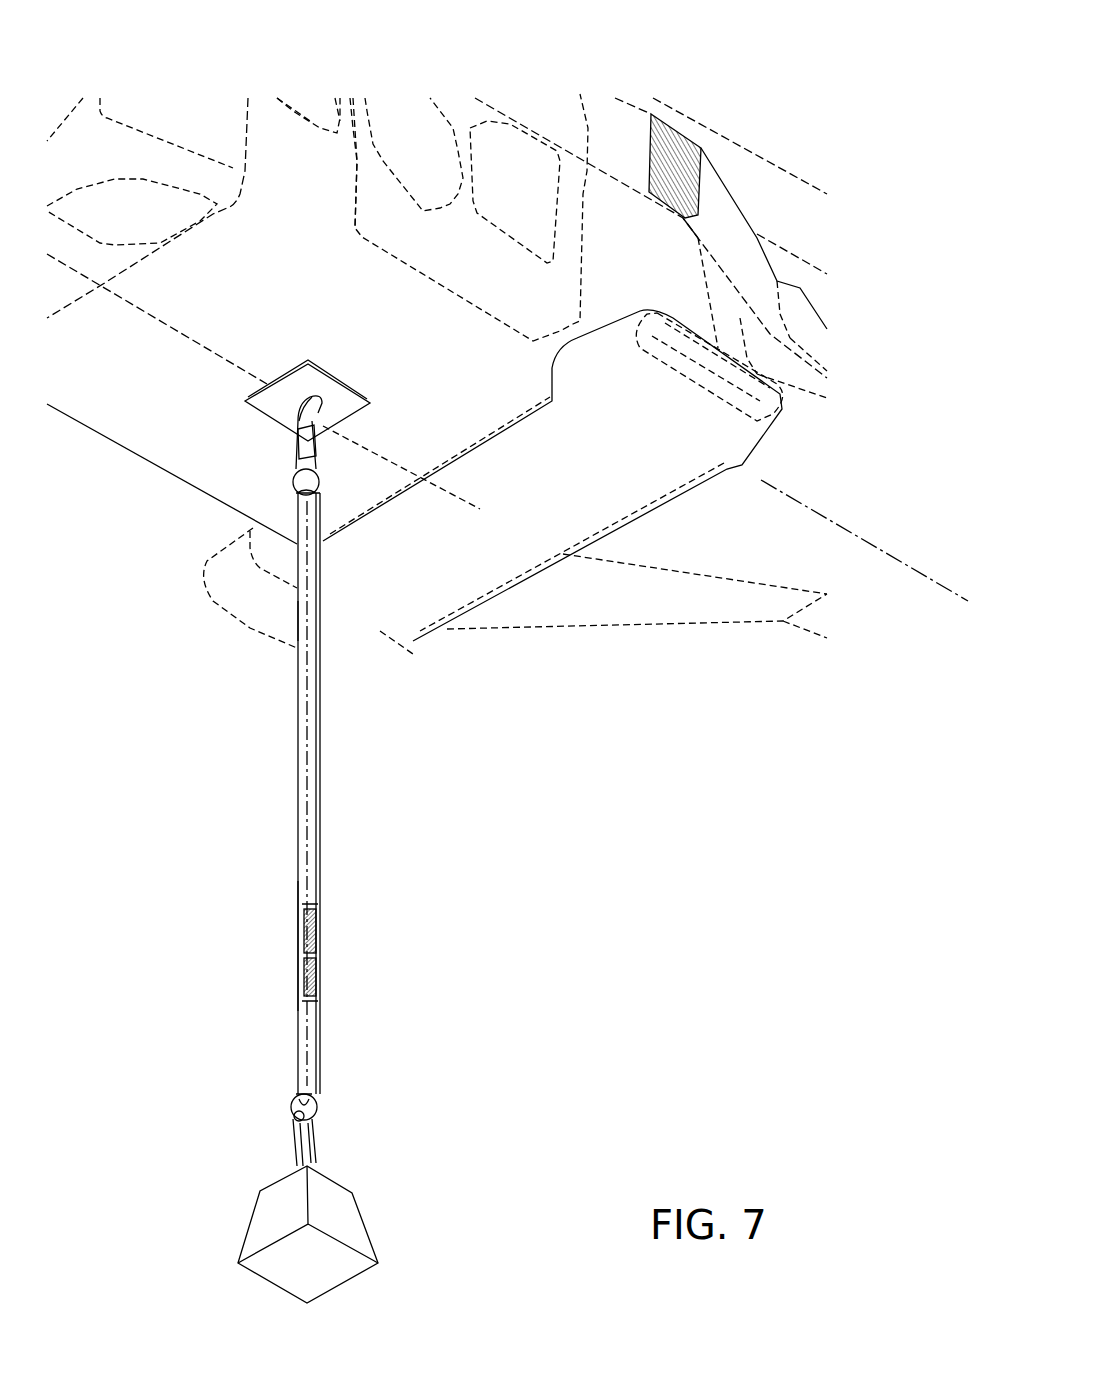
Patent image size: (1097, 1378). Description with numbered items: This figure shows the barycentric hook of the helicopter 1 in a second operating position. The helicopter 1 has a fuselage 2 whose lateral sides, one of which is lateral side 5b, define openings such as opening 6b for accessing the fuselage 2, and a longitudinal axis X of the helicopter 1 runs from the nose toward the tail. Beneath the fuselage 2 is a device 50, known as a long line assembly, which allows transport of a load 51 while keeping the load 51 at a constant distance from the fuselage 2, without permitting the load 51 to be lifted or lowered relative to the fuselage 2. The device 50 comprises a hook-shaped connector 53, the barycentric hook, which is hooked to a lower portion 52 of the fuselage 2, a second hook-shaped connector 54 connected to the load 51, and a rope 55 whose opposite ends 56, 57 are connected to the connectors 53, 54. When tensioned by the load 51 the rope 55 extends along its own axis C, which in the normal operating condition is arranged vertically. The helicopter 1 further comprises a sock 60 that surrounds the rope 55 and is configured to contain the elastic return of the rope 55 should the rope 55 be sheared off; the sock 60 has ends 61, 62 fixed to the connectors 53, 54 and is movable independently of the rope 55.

The helicopter 1 is at (742, 110).
The fuselage 2 is at (100, 413).
The lateral side 5b is at (277, 63).
The opening 6b is at (372, 207).
The longitudinal axis X is at (870, 543).
The device 50 is at (257, 770).
The load 51 is at (333, 1270).
The lower portion 52 is at (435, 585).
The connector 53 is at (323, 441).
The connector 54 is at (320, 1155).
The rope 55 is at (323, 937).
The end 56 is at (320, 531).
The end 57 is at (327, 1110).
The sock 60 is at (257, 913).
The end 61 is at (297, 470).
The end 62 is at (293, 1112).
The axis C is at (310, 852).